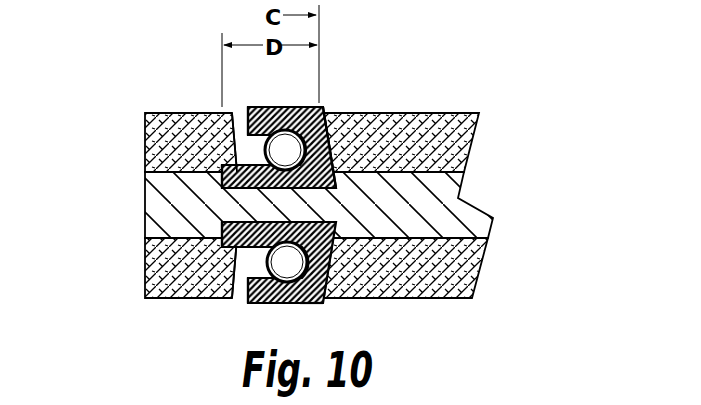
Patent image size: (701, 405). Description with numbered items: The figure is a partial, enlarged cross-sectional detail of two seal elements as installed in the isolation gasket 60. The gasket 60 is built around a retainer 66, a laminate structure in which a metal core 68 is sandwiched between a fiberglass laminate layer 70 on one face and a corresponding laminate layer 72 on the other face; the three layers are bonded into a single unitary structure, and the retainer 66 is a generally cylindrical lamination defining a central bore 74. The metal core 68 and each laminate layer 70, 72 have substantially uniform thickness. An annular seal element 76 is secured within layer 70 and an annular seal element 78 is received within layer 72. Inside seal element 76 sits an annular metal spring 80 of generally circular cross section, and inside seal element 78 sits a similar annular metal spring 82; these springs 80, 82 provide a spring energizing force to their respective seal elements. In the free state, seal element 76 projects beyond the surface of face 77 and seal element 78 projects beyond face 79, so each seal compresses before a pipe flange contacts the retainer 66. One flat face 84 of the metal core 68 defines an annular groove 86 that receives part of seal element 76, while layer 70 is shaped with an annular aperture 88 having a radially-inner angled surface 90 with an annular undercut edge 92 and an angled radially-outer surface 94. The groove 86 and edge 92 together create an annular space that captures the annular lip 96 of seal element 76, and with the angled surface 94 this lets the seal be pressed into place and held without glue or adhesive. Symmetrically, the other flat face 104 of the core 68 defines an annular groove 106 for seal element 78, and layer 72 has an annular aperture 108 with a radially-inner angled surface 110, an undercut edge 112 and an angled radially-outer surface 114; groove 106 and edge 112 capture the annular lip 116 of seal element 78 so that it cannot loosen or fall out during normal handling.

The gasket 60 is at (463, 92).
The retainer 66 is at (85, 115).
The metal core 68 is at (437, 213).
The laminate layer 70 is at (443, 138).
The laminate layer 72 is at (455, 275).
The central bore 74 is at (106, 145).
The annular seal element 76 is at (331, 129).
The face 77 is at (390, 138).
The annular seal element 78 is at (278, 304).
The face 79 is at (450, 298).
The annular metal spring 80 is at (302, 110).
The annular metal spring 82 is at (163, 298).
The flat face 84 is at (408, 130).
The annular groove 86 is at (221, 176).
The annular aperture 88 is at (244, 104).
The angled surface 90 is at (240, 110).
The undercut edge 92 is at (145, 135).
The radially-outer surface 94 is at (402, 167).
The annular lip 96 is at (220, 200).
The flat face 104 is at (465, 245).
The annular groove 106 is at (221, 221).
The annular aperture 108 is at (240, 292).
The angled surface 110 is at (237, 288).
The undercut edge 112 is at (225, 247).
The radially-outer surface 114 is at (333, 296).
The annular lip 116 is at (350, 237).